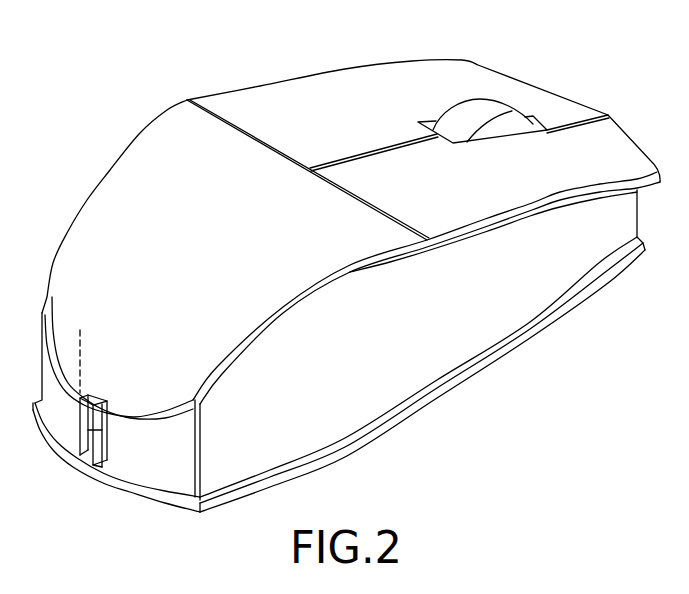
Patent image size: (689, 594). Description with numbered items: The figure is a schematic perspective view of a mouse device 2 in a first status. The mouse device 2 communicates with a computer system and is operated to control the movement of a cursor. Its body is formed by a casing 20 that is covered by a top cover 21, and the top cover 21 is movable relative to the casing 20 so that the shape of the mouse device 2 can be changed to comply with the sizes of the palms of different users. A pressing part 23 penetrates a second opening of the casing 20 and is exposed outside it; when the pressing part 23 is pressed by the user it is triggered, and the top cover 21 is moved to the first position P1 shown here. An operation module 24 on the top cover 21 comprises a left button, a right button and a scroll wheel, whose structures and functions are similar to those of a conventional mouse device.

The mouse device 2 is at (148, 35).
The casing 20 is at (440, 380).
The top cover 21 is at (128, 187).
The pressing part 23 is at (78, 454).
The operation module 24 is at (480, 112).
The first position P1 is at (78, 348).